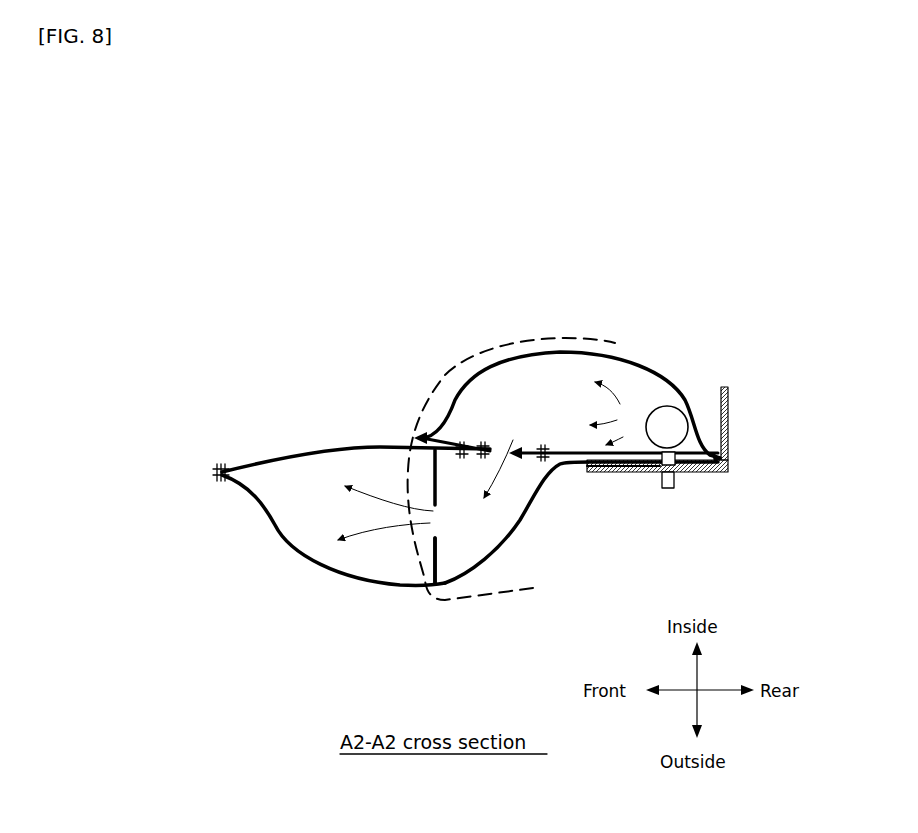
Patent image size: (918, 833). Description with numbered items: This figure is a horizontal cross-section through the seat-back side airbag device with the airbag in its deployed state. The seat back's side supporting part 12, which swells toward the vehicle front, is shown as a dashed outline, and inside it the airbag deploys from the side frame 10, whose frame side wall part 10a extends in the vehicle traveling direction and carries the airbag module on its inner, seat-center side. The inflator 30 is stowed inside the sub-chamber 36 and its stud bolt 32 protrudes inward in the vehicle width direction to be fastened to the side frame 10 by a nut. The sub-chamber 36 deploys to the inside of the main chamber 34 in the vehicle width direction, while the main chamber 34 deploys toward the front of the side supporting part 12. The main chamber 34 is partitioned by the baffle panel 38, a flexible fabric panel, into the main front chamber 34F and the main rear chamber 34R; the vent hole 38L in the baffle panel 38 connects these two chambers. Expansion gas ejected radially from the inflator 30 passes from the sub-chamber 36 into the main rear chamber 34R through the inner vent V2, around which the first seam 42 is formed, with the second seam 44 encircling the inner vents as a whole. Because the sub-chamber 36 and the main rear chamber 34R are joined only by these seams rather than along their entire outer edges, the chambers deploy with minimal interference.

The side frame 10 is at (734, 463).
The frame side wall part 10a is at (611, 476).
The side supporting part 12 is at (524, 337).
The inflator 30 is at (668, 406).
The stud bolt 32 is at (674, 480).
The main chamber 34 is at (274, 548).
The main front chamber 34F is at (288, 468).
The main rear chamber 34R is at (463, 556).
The sub-chamber 36 is at (566, 348).
The baffle panel 38 is at (432, 483).
The vent hole 38L is at (428, 527).
The first seam 42 is at (517, 458).
The second seam 44 is at (422, 436).
The inner vent V2 is at (494, 443).